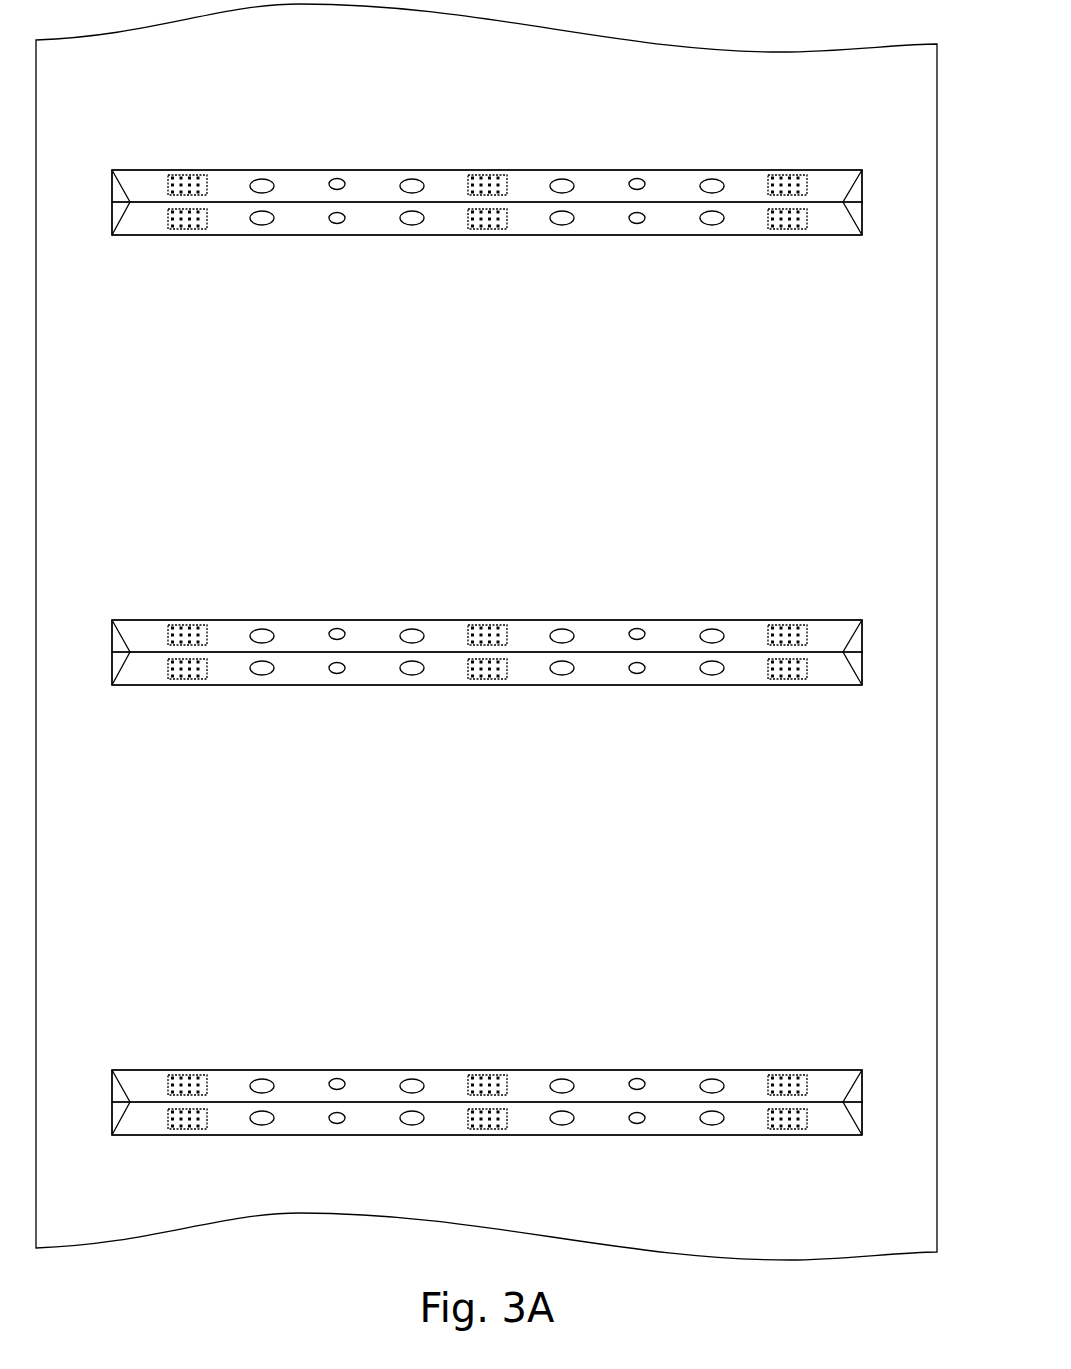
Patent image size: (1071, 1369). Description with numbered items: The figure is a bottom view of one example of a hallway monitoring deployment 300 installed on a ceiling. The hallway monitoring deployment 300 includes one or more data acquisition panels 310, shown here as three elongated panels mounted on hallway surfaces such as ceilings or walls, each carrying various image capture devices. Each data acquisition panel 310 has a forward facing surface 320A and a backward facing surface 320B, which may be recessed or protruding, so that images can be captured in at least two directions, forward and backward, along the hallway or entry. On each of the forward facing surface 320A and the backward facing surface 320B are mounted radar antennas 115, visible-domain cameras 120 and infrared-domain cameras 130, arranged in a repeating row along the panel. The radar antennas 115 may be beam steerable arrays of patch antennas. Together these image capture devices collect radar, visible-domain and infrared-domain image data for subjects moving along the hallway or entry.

The hallway monitoring deployment 300 is at (772, 57).
The data acquisition panel 310 is at (124, 202).
The forward facing surface 320A is at (486, 610).
The backward facing surface 320B is at (486, 693).
The radar antenna 115 is at (487, 651).
The visible-domain camera 120 is at (487, 651).
The infrared-domain camera 130 is at (487, 651).